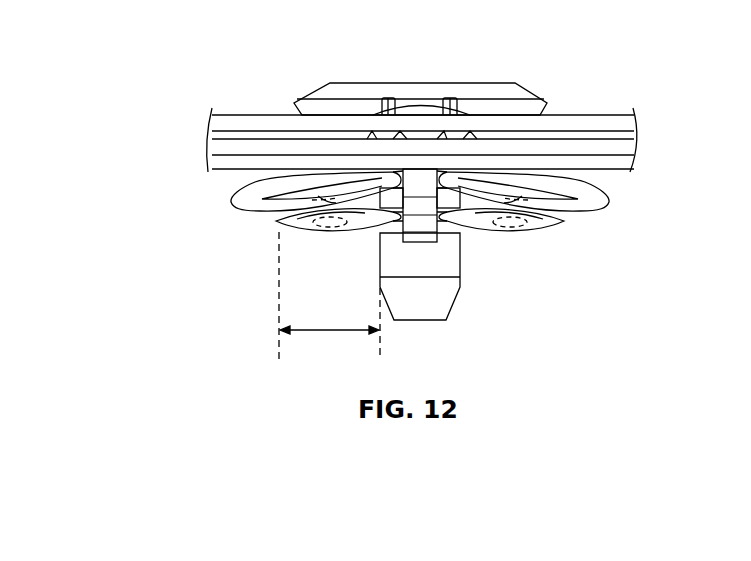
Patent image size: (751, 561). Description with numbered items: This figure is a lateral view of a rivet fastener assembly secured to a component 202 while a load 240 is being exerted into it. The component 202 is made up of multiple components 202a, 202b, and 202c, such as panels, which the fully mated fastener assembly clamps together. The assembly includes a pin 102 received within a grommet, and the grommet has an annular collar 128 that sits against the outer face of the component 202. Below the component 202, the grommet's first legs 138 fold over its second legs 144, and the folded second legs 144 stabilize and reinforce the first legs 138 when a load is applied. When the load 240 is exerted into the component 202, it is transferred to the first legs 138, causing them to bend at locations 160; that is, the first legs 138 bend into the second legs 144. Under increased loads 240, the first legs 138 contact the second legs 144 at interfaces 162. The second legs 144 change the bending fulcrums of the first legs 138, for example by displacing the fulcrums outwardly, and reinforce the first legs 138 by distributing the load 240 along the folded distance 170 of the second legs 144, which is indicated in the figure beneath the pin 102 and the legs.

The pin 102 is at (452, 301).
The annular collar 128 is at (331, 83).
The first legs 138 is at (232, 203).
The second legs 144 is at (275, 225).
The locations 160 is at (518, 224).
The interfaces 162 is at (338, 204).
The folded distance 170 is at (330, 332).
The component 202 is at (459, 159).
The component 202a is at (622, 97).
The component 202b is at (603, 160).
The component 202c is at (612, 168).
The load 240 is at (240, 77).